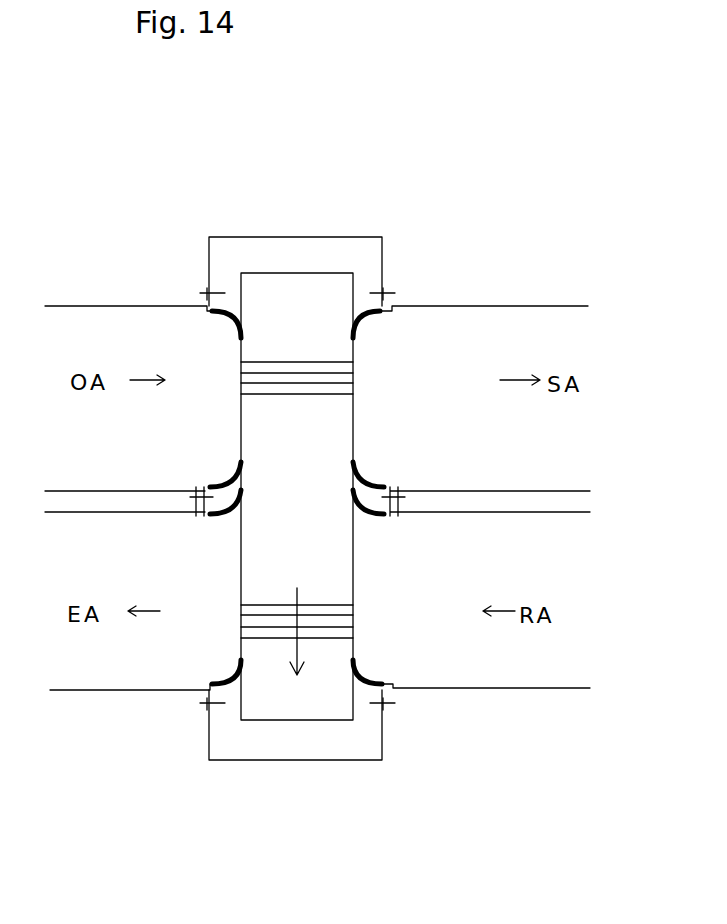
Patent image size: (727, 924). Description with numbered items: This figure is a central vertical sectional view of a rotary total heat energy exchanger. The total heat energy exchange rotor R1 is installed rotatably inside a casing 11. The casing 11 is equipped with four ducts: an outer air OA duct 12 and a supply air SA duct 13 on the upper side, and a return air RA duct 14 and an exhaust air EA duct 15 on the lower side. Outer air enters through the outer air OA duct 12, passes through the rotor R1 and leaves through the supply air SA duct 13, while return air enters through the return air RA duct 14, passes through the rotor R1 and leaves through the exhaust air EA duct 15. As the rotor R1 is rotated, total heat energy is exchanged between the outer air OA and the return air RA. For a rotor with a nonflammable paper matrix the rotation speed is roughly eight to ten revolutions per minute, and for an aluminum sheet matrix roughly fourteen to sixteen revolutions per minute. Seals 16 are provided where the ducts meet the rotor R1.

The casing 11 is at (350, 237).
The total heat energy exchange rotor R1 is at (322, 302).
The outer air OA duct 12 is at (128, 306).
The supply air SA duct 13 is at (507, 306).
The return air RA duct 14 is at (520, 688).
The exhaust air EA duct 15 is at (112, 692).
The seal 16 is at (222, 300).